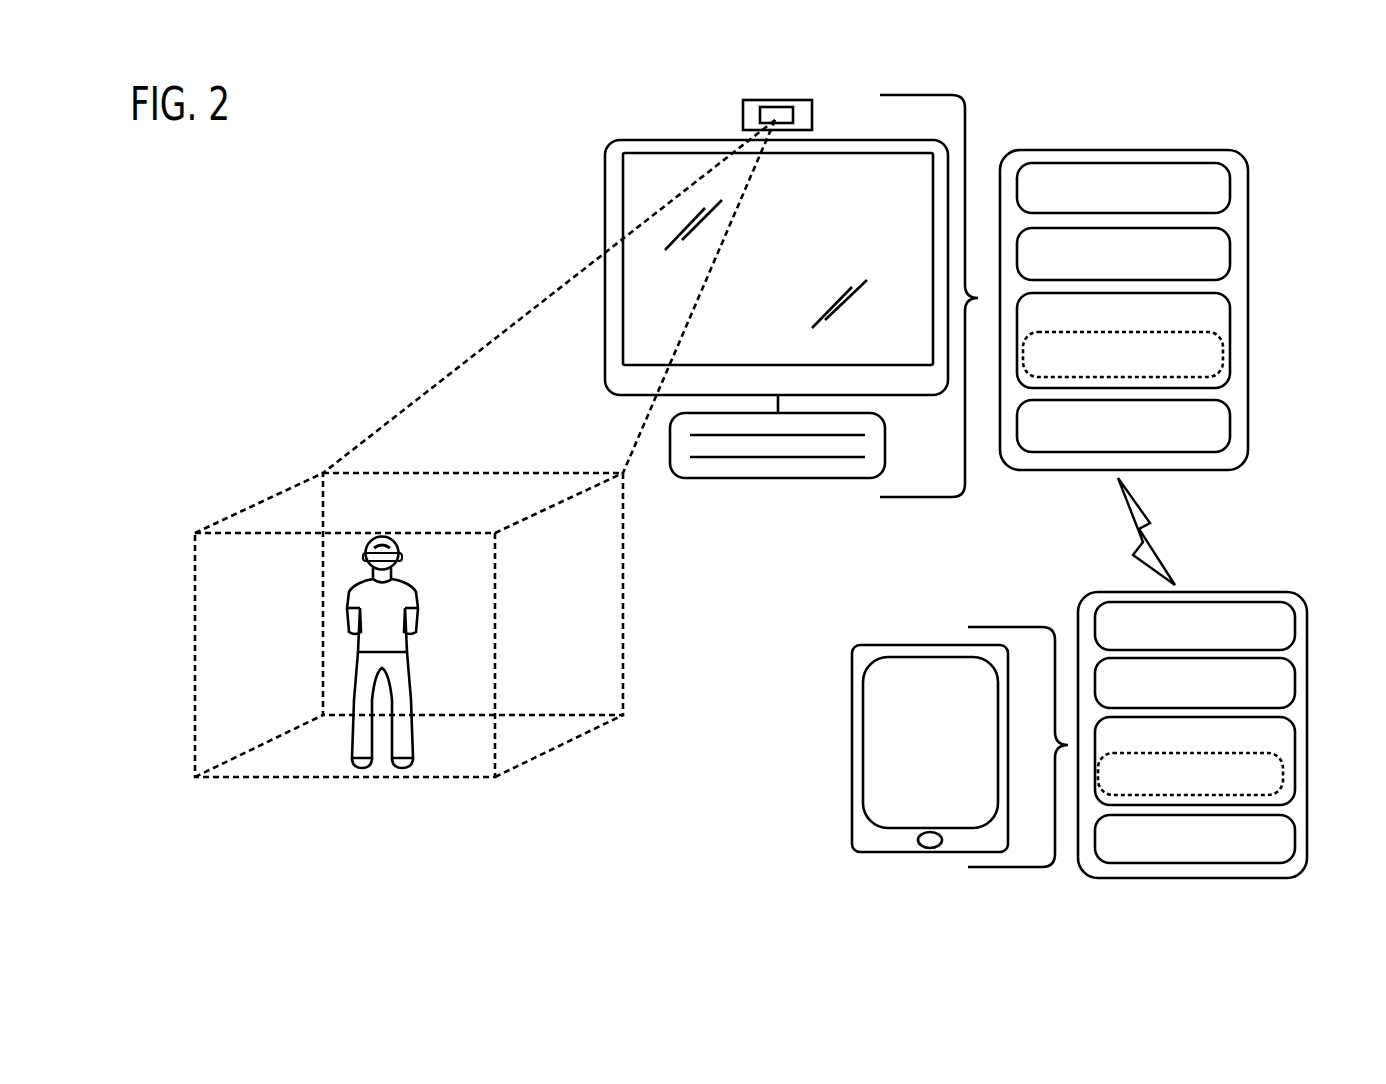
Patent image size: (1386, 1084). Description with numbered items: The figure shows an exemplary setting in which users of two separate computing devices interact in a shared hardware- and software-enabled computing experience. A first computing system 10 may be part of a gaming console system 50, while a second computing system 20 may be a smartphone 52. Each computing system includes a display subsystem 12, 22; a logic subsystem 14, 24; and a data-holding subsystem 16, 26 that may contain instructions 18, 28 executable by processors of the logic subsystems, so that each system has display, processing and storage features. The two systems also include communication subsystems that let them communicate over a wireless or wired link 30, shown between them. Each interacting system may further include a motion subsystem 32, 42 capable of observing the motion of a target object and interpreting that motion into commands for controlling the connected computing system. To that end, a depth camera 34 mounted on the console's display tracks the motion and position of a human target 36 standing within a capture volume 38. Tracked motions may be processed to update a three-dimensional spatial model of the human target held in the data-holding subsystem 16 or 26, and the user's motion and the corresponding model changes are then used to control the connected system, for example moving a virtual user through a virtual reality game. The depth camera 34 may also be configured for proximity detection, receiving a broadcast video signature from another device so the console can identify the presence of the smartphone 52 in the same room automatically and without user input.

The computing system 10 is at (1091, 296).
The display subsystem 12 is at (1173, 201).
The logic subsystem 14 is at (1165, 266).
The data-holding subsystem 16 is at (1208, 326).
The instructions 18 is at (1207, 365).
The motion subsystem 32 is at (1220, 438).
The computing system 20 is at (1163, 735).
The display subsystem 22 is at (1245, 636).
The logic subsystem 24 is at (1230, 695).
The data-holding subsystem 26 is at (1270, 748).
The instructions 28 is at (1268, 785).
The motion subsystem 42 is at (1285, 850).
The link 30 is at (1158, 538).
The depth camera 34 is at (743, 100).
The human target 36 is at (371, 634).
The capture volume 38 is at (262, 463).
The gaming console system 50 is at (574, 155).
The smartphone 52 is at (820, 628).